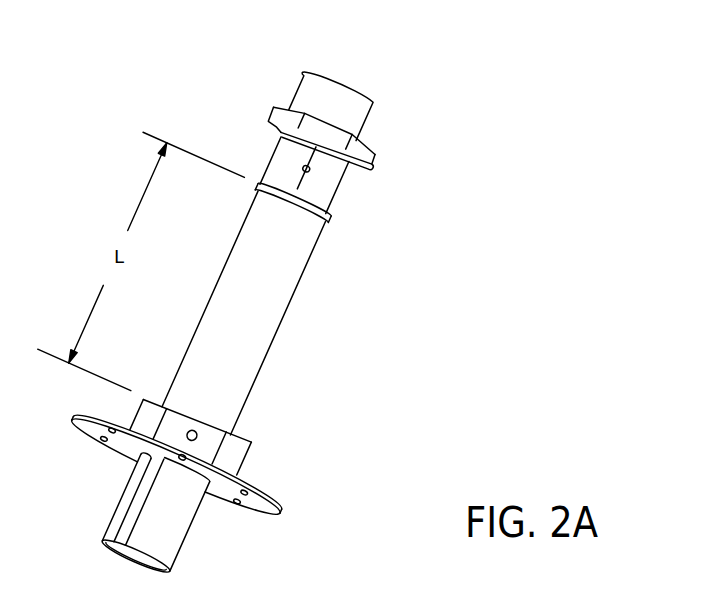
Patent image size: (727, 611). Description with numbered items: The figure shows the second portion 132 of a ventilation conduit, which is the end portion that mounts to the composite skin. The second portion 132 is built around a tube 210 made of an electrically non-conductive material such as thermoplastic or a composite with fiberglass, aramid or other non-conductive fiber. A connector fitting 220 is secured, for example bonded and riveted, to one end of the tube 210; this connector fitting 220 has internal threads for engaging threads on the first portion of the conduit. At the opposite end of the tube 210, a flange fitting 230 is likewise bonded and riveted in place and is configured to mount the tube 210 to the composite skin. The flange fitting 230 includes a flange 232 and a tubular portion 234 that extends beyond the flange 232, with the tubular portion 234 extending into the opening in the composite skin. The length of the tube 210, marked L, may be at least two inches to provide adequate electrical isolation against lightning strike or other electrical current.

The second portion 132 is at (580, 128).
The tube 210 is at (278, 297).
The connector fitting 220 is at (370, 128).
The flange fitting 230 is at (247, 449).
The flange 232 is at (284, 509).
The tubular portion 234 is at (172, 567).